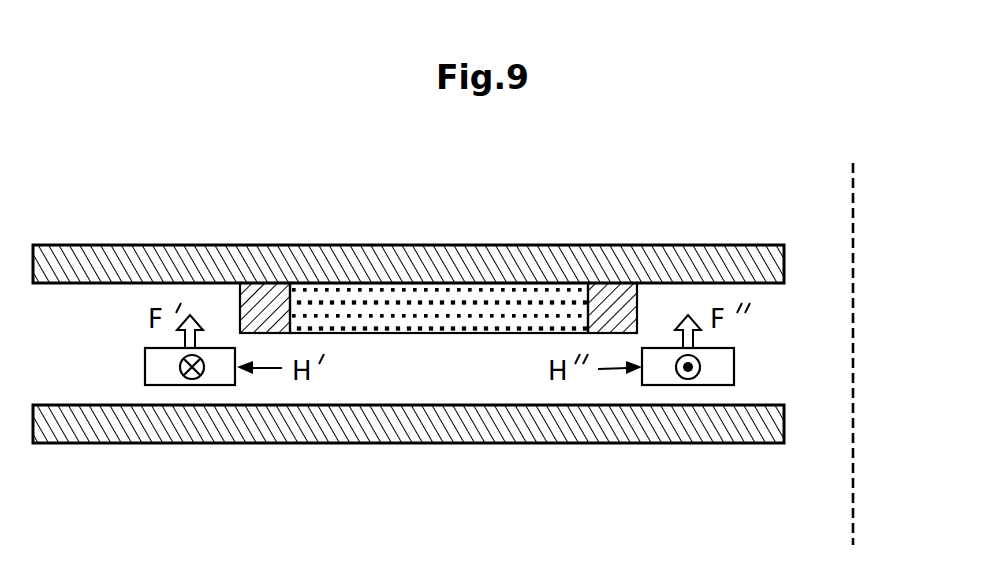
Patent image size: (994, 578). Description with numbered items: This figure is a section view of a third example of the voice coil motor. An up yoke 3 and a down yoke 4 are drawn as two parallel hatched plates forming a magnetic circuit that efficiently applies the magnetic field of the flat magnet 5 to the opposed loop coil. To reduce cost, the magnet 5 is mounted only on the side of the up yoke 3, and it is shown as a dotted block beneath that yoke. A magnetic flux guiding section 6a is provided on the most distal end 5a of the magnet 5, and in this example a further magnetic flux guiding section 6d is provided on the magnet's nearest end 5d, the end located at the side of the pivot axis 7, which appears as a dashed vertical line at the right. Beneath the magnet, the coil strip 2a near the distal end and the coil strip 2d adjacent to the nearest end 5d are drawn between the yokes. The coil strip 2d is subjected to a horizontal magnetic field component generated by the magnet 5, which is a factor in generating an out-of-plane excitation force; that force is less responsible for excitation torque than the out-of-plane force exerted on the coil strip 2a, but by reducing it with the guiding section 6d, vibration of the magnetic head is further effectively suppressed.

The coil strip 2a is at (145, 365).
The coil strip (coil's nearest part) 2d is at (734, 366).
The up yoke 3 is at (118, 248).
The down yoke 4 is at (118, 442).
The magnet 5 is at (450, 310).
The most distal end of the magnet 5a is at (302, 307).
The magnet's nearest end 5d is at (558, 307).
The magnetic flux guiding section 6a is at (260, 300).
The magnetic flux guiding section 6d is at (613, 303).
The pivot axis 7 is at (856, 238).